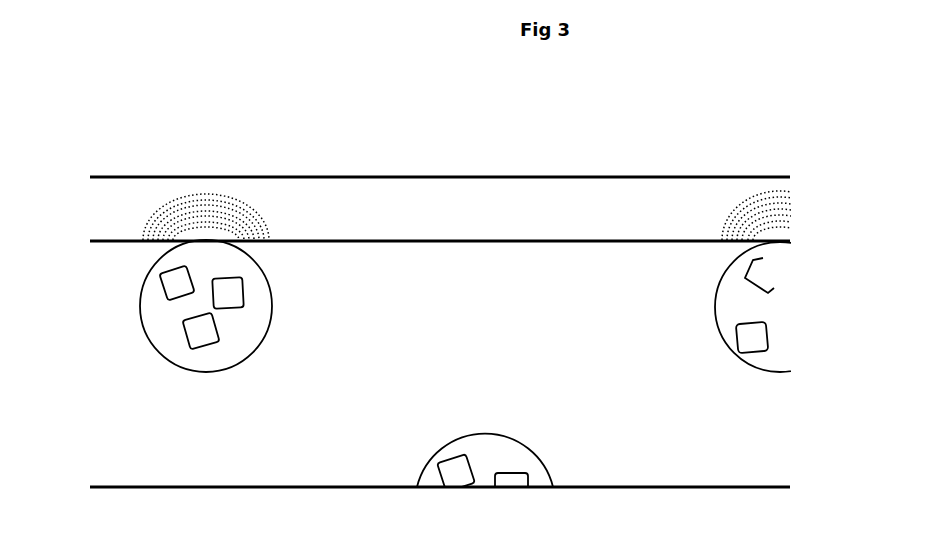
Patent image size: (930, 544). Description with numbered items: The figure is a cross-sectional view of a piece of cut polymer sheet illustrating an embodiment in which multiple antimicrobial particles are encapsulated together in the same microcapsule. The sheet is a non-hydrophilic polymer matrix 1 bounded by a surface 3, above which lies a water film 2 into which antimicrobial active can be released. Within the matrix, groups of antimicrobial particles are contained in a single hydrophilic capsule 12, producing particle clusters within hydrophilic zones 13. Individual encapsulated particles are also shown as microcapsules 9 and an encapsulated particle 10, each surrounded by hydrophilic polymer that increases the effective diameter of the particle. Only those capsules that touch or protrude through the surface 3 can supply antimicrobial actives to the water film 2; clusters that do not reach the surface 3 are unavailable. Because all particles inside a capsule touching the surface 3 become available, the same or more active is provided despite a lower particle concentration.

The non-hydrophilic polymer matrix 1 is at (105, 423).
The water film 2 is at (462, 190).
The surface 3 is at (97, 230).
The microcapsule 9 is at (228, 302).
The encapsulated particle 10 is at (257, 297).
The hydrophilic capsule 12 is at (487, 442).
The hydrophilic zone 13 is at (153, 317).